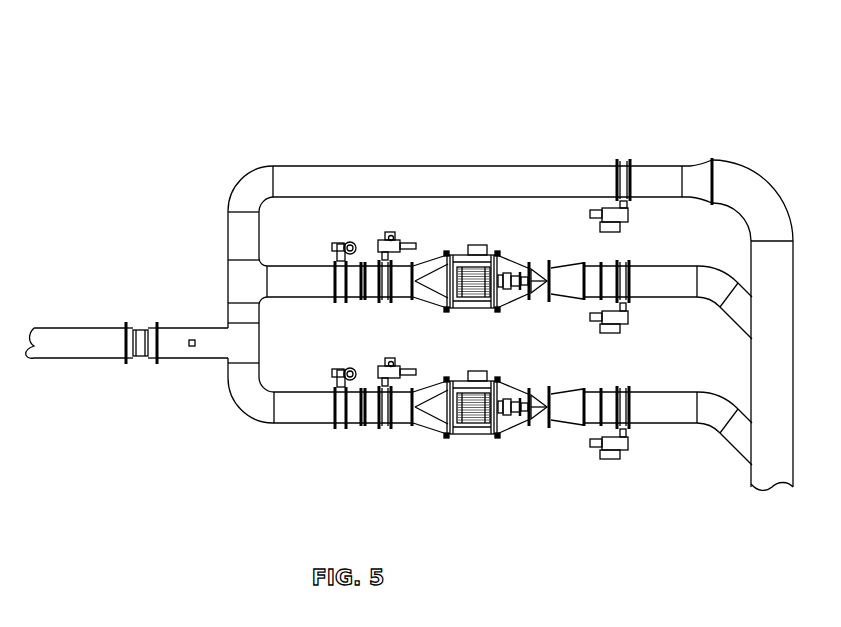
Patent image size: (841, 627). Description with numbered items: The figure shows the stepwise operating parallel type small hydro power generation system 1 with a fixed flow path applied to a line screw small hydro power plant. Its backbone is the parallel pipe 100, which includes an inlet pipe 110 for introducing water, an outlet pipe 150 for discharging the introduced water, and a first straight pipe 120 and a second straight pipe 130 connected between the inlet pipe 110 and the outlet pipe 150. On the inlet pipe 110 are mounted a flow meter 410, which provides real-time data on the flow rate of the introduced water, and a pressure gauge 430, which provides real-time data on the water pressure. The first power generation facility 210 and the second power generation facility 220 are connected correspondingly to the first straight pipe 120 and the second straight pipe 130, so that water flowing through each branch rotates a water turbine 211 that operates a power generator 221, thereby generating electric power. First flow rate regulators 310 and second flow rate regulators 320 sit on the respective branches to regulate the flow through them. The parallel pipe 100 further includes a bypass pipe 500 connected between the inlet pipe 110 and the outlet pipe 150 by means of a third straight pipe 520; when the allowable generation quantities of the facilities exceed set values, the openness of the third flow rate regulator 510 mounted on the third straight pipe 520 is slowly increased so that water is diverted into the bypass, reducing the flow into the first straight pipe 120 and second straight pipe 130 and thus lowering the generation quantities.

The stepwise operating parallel type small hydro power generation system 1 is at (409, 91).
The parallel pipe 100 is at (283, 151).
The inlet pipe 110 is at (95, 336).
The first straight pipe 120 is at (313, 412).
The second straight pipe 130 is at (308, 278).
The outlet pipe 150 is at (767, 476).
The first power generation facility 210 is at (472, 434).
The water turbine 211 is at (532, 266).
The second power generation facility 220 is at (490, 266).
The power generator 221 is at (465, 268).
The first flow rate regulator 310 is at (386, 432).
The second flow rate regulator 320 is at (384, 242).
The flow meter 410 is at (142, 324).
The pressure gauge 430 is at (192, 338).
The bypass pipe 500 is at (685, 73).
The third flow rate regulator 510 is at (633, 163).
The third straight pipe 520 is at (696, 172).